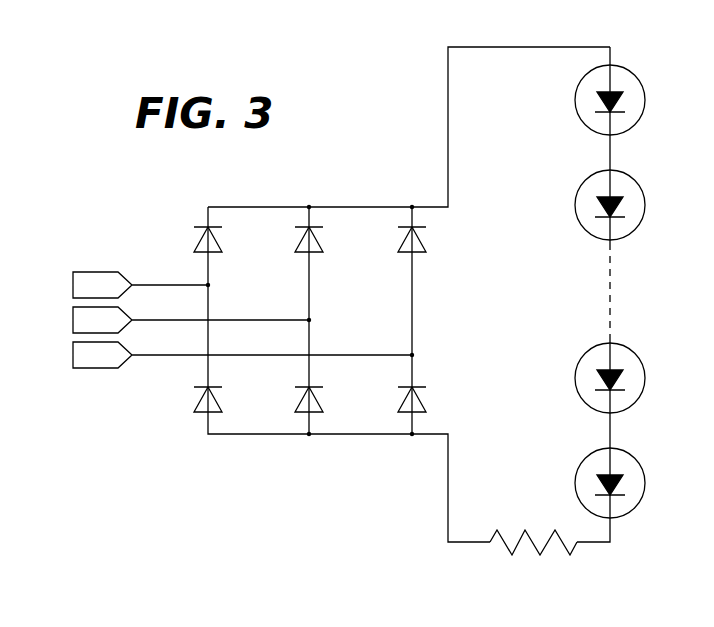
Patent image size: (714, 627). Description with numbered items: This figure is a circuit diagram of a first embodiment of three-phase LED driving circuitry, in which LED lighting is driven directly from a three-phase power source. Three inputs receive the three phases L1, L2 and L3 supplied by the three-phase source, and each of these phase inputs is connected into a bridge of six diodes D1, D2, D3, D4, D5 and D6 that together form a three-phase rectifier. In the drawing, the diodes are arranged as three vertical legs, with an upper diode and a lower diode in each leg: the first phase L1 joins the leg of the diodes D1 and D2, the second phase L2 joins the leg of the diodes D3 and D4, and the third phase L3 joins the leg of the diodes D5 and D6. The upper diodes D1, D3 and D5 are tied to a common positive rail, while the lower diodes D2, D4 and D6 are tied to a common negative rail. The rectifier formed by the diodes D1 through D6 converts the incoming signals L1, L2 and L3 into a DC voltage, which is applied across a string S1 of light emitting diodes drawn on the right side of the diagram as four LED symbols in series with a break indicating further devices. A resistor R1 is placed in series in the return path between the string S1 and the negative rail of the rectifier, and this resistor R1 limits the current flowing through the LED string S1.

The first phase L1 is at (140, 285).
The second phase L2 is at (191, 320).
The third phase L3 is at (242, 355).
The diode D1 is at (225, 250).
The diode D2 is at (225, 410).
The diode D3 is at (326, 250).
The diode D4 is at (326, 410).
The diode D5 is at (429, 250).
The diode D6 is at (429, 410).
The resistor R1 is at (533, 528).
The string of light emitting diodes S1 is at (614, 282).